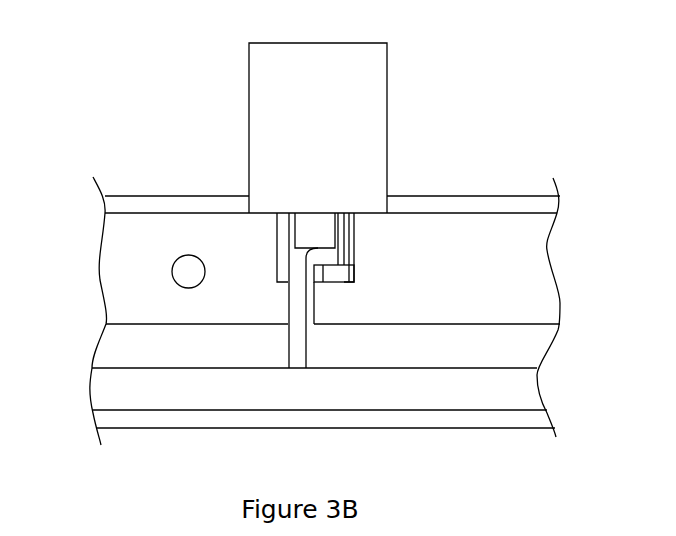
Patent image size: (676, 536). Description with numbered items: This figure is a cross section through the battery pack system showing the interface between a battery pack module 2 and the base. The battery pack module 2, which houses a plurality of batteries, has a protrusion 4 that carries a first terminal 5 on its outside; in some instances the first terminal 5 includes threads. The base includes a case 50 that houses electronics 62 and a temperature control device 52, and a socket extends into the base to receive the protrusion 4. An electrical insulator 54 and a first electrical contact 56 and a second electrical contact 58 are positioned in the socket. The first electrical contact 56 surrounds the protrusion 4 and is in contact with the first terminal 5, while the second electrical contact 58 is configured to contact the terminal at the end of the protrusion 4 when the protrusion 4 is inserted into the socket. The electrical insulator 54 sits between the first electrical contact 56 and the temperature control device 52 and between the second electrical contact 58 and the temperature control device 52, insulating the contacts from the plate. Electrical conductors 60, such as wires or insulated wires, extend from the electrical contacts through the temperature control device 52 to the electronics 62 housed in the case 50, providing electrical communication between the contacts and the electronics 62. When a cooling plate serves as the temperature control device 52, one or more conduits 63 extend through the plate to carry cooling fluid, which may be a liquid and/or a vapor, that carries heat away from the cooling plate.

The battery pack module 2 is at (389, 111).
The protrusion 4 is at (317, 225).
The first terminal 5 is at (338, 227).
The case 50 is at (127, 205).
The temperature control device 52 is at (117, 302).
The electrical insulator 54 is at (322, 283).
The first electrical contact 56 is at (288, 239).
The second electrical contact 58 is at (310, 253).
The electrical conductors 60 is at (288, 350).
The electronics 62 is at (395, 378).
The conduits 63 is at (172, 285).